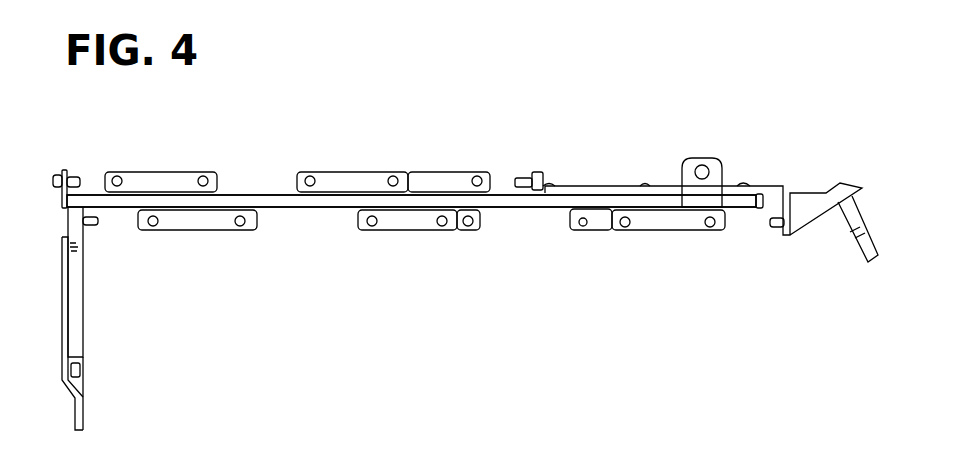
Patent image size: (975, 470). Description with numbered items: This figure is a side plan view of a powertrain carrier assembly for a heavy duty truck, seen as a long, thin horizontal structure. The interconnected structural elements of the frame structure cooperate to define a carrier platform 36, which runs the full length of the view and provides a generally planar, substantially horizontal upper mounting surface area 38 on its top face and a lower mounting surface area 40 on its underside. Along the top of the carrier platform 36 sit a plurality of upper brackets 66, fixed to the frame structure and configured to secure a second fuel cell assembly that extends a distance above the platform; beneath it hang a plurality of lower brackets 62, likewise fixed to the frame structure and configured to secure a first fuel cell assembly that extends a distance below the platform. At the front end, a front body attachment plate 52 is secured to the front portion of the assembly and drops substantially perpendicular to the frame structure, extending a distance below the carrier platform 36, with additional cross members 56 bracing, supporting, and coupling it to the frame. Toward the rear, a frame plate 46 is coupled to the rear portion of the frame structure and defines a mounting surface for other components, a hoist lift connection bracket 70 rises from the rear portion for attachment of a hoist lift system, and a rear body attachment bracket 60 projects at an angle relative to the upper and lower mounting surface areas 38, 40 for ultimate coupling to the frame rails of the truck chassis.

The carrier platform 36 is at (408, 192).
The upper mounting surface area 38 is at (252, 197).
The lower mounting surface area 40 is at (298, 210).
The frame plate 46 is at (603, 190).
The front body attachment plate 52 is at (62, 320).
The additional cross members 56 is at (77, 247).
The rear body attachment brackets 60 is at (853, 183).
The lower brackets 62 is at (205, 230).
The upper brackets 66 is at (150, 172).
The hoist lift connection bracket 70 is at (700, 158).